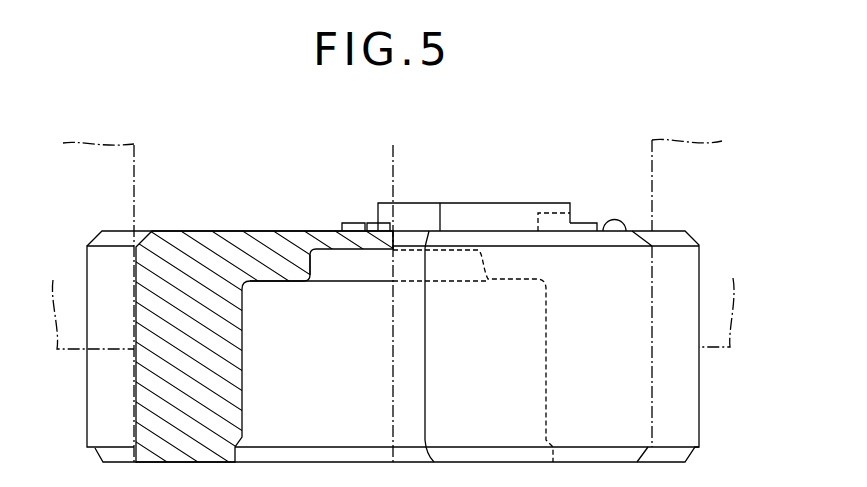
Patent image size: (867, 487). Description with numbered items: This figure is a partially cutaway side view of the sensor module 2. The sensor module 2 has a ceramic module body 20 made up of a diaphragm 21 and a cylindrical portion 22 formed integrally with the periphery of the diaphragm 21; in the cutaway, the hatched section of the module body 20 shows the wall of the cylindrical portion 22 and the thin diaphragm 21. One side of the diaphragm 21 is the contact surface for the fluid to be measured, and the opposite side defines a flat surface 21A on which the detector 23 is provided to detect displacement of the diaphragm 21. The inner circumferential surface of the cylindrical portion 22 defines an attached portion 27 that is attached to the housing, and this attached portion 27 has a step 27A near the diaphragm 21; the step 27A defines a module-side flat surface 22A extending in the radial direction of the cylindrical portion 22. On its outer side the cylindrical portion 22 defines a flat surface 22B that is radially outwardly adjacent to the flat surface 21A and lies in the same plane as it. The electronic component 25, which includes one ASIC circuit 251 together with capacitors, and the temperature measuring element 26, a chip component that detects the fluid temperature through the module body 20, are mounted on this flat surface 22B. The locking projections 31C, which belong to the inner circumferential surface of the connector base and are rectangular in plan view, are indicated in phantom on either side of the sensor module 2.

The sensor module 2 is at (526, 138).
The module body 20 is at (232, 231).
The diaphragm 21 is at (331, 240).
The flat surface 21A is at (402, 227).
The cylindrical portion 22 is at (147, 383).
The module-side flat surface 22A is at (283, 283).
The flat surface 22B is at (626, 231).
The detector 23 is at (414, 229).
The electronic component 25 is at (497, 204).
The ASIC circuit 251 is at (533, 203).
The temperature measuring element 26 is at (562, 201).
The attached portion 27 is at (243, 372).
The step 27A is at (308, 257).
The locking projections 31C is at (136, 202).